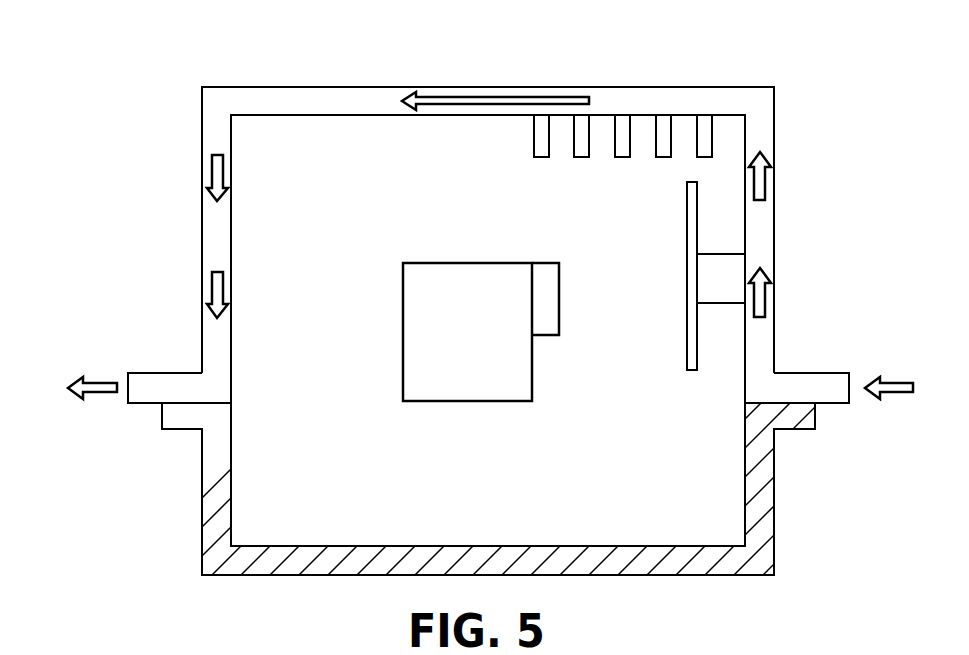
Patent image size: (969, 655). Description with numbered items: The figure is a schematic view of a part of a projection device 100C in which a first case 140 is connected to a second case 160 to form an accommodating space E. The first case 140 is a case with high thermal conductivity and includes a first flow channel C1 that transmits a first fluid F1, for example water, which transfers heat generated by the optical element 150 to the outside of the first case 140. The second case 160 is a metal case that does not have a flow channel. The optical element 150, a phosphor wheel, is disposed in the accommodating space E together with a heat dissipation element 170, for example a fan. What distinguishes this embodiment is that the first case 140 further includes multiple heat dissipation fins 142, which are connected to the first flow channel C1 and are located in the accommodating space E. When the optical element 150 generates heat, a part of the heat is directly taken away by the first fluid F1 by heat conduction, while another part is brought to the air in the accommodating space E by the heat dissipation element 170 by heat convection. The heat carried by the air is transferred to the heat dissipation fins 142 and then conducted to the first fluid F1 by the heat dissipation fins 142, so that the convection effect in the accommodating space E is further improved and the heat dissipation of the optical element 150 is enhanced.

The projection device 100C is at (141, 63).
The first case 140 is at (765, 117).
The heat dissipation fins 142 is at (533, 133).
The optical element 150 is at (723, 295).
The second case 160 is at (762, 497).
The heat dissipation element 170 is at (474, 275).
The accommodating space E is at (320, 135).
The first flow channel C1 is at (670, 101).
The first fluid F1 is at (485, 96).